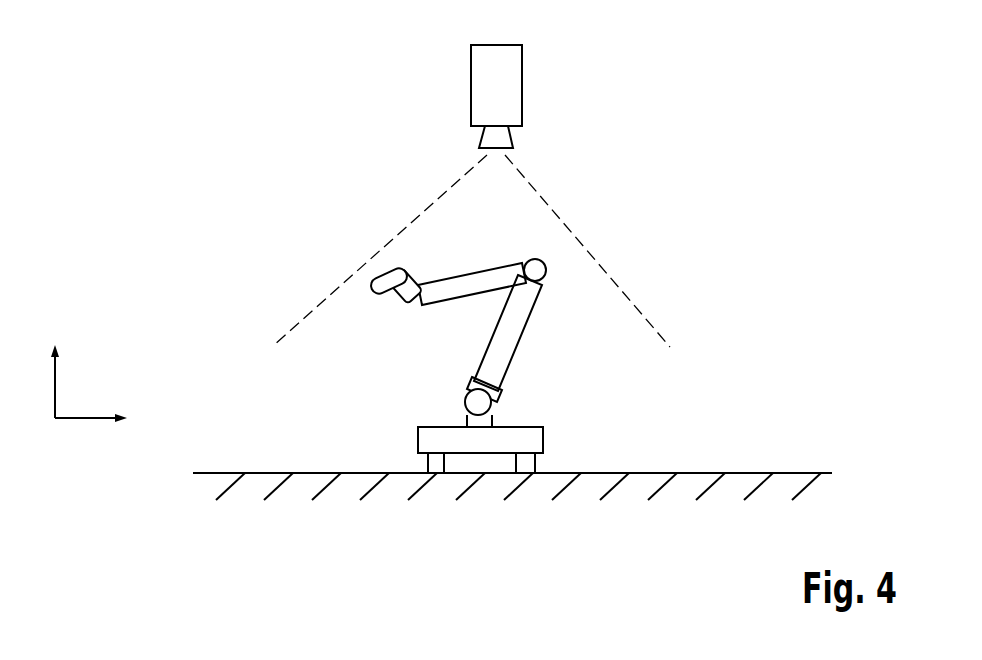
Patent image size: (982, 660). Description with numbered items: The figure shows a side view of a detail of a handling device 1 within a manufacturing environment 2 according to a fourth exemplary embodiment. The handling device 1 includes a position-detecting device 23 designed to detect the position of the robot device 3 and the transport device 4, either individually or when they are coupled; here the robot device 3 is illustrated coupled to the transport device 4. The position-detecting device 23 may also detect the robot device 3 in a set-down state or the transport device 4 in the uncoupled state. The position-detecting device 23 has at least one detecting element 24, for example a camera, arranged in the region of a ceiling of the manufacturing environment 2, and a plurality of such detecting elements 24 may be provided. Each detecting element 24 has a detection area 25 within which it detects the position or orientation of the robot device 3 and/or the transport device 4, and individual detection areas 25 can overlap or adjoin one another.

The handling device 1 is at (160, 90).
The manufacturing environment 2 is at (763, 192).
The robot device 3 is at (545, 365).
The transport device 4 is at (538, 498).
The position-detecting device 23 is at (395, 130).
The detecting element 24 is at (557, 71).
The detection area 25 is at (325, 271).